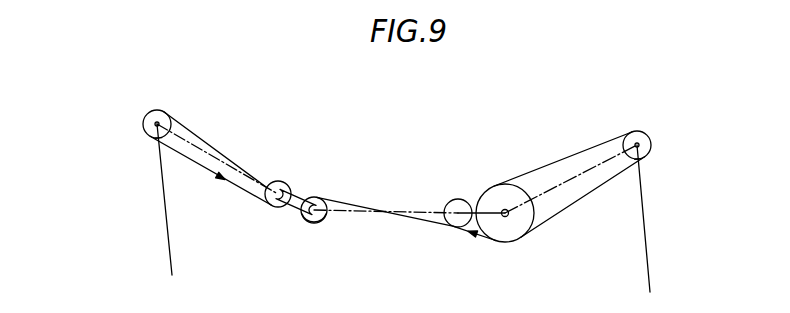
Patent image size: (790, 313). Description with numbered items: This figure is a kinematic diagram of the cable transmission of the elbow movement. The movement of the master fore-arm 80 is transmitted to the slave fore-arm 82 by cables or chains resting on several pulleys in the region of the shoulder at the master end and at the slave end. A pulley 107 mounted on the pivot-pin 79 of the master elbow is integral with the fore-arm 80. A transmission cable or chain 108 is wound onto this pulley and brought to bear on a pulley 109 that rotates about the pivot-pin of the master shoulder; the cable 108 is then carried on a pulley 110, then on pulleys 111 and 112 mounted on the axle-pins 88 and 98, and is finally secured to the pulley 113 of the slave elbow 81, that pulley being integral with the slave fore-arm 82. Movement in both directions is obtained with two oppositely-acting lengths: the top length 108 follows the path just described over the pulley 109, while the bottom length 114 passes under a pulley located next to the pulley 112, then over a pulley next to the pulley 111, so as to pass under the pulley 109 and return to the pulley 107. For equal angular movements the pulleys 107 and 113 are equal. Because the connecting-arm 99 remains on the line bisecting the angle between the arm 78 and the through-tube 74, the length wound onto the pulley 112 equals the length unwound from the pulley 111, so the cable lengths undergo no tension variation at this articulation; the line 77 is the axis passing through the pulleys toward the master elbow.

The pulley of the slave elbow 113 is at (152, 121).
The slave elbow 81 is at (162, 116).
The arm 78 is at (190, 141).
The slave fore-arm 82 is at (165, 222).
The bottom length 114 is at (197, 162).
The axle-pin 98 is at (268, 206).
The pulley 112 is at (280, 182).
The connecting-arm 99 is at (297, 210).
The pulley 111 is at (318, 197).
The axle-pin 88 is at (320, 222).
The transmission cable or chain 108 is at (350, 204).
The through-tube 74 is at (419, 210).
The pulley 110 is at (454, 226).
The pulley 109 is at (500, 192).
The center line 77 is at (560, 183).
The pulley 107 is at (648, 146).
The pivot-pin of the master elbow 79 is at (640, 133).
The master fore-arm 80 is at (648, 235).